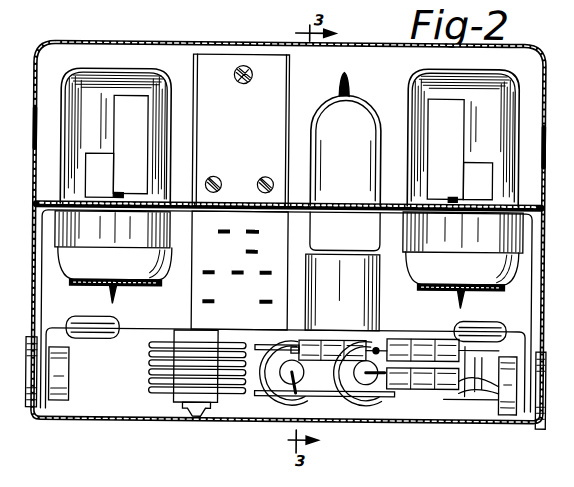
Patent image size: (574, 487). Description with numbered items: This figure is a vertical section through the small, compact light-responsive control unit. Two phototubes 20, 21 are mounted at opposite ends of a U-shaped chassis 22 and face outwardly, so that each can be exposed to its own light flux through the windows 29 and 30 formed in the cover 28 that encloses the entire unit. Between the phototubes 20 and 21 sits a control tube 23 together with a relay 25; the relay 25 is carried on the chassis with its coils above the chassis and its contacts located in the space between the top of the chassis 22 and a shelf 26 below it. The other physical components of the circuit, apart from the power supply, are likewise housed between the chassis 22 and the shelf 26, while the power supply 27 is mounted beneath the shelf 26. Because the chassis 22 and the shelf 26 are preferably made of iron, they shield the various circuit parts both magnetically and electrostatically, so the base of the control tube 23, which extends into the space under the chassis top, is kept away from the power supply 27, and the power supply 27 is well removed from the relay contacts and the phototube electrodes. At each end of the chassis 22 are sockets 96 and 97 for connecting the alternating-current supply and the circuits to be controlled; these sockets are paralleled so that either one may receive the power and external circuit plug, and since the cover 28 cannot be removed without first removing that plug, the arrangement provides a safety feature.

The phototube 20 is at (122, 70).
The phototube 21 is at (455, 72).
The U-shaped chassis 22 is at (34, 196).
The control tube 23 is at (354, 94).
The relay 25 is at (288, 66).
The shelf 26 is at (50, 330).
The power supply 27 is at (333, 414).
The cover 28 is at (177, 43).
The window 29 is at (34, 133).
The window 30 is at (543, 144).
The socket 96 is at (56, 404).
The socket 97 is at (500, 415).